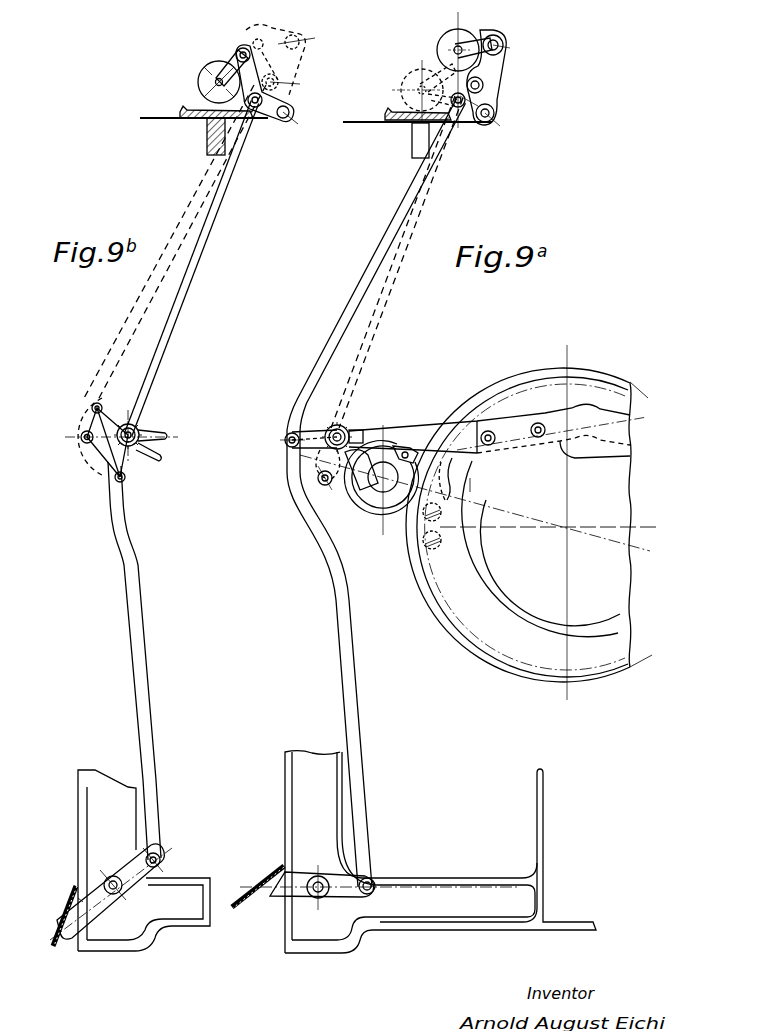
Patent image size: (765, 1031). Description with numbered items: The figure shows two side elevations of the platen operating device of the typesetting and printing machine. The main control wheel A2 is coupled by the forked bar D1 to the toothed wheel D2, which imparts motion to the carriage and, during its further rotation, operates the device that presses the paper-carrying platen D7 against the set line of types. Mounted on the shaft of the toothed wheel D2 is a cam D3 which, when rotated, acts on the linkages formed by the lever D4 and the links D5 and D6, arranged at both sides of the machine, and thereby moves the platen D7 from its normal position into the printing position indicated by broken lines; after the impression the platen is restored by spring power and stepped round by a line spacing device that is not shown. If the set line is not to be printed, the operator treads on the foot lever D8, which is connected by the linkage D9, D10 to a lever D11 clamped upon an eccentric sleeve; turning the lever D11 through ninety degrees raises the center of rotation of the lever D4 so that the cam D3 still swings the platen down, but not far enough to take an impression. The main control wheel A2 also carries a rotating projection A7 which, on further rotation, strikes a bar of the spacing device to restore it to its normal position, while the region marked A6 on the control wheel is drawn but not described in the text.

In FIG. 9A, the forked bar D1 is at (444, 428).
In FIG. 9A, the toothed wheel D2 is at (405, 440).
In FIG. 9A, the cam D3 is at (358, 490).
In FIG. 9B, the lever D4 is at (130, 450).
In FIG. 9A, the lever D4 is at (345, 430).
In FIG. 9B, the linkage D5 is at (166, 340).
In FIG. 9A, the linkage D5 is at (347, 313).
In FIG. 9B, the linkage D6 is at (290, 106).
In FIG. 9A, the linkage D6 is at (490, 70).
In FIG. 9B, the platen D7 is at (224, 78).
In FIG. 9A, the platen D7 is at (446, 40).
In FIG. 9B, the foot lever D8 is at (58, 945).
In FIG. 9A, the foot lever D8 is at (260, 880).
In FIG. 9B, the linkage D9 is at (130, 890).
In FIG. 9A, the linkage D9 is at (303, 900).
In FIG. 9B, the linkage D10 is at (142, 657).
In FIG. 9A, the linkage D10 is at (358, 708).
In FIG. 9B, the lever D11 is at (106, 414).
In FIG. 9A, the lever D11 is at (368, 434).
In FIG. 9A, the main control wheel A2 is at (546, 356).
In FIG. 9A, the lug A6 is at (458, 482).
In FIG. 9A, the projection A7 is at (430, 548).